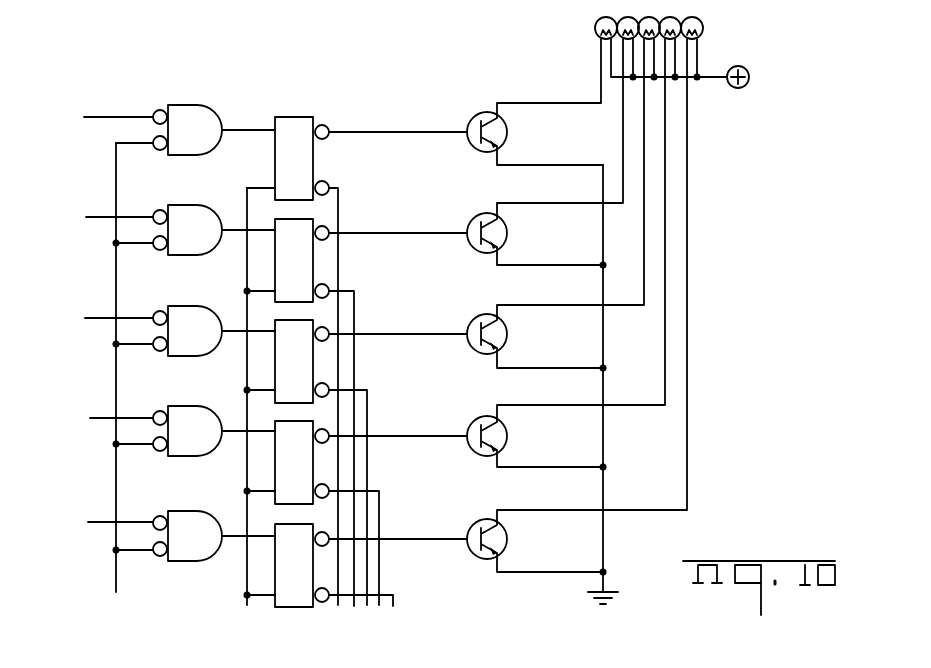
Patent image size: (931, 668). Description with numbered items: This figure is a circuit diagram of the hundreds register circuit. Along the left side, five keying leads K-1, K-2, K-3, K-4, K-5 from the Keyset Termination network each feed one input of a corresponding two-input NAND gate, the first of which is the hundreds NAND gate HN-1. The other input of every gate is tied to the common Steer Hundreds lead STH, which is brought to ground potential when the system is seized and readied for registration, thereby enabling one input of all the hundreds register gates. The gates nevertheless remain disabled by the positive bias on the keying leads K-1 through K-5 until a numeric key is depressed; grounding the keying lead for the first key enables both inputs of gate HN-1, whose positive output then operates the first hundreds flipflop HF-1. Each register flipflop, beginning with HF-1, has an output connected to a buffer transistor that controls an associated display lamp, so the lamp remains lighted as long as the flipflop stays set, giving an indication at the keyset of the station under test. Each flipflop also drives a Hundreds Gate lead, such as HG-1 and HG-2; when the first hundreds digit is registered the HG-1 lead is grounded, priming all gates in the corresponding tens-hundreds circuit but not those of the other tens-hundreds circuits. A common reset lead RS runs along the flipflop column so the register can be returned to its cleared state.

The keying lead K-1 is at (97, 117).
The keying lead K-2 is at (99, 217).
The keying lead K-3 is at (99, 318).
The keying lead K-4 is at (99, 418).
The keying lead K-5 is at (101, 521).
The #100 NAND gate HN-1 is at (195, 106).
The #100 flipflop HF-1 is at (305, 117).
The Hundreds Gate lead HG-1 is at (338, 190).
The Hundreds Gate lead HG-2 is at (367, 318).
The Steer Hundreds lead STH is at (114, 591).
The reset lead RS is at (247, 583).